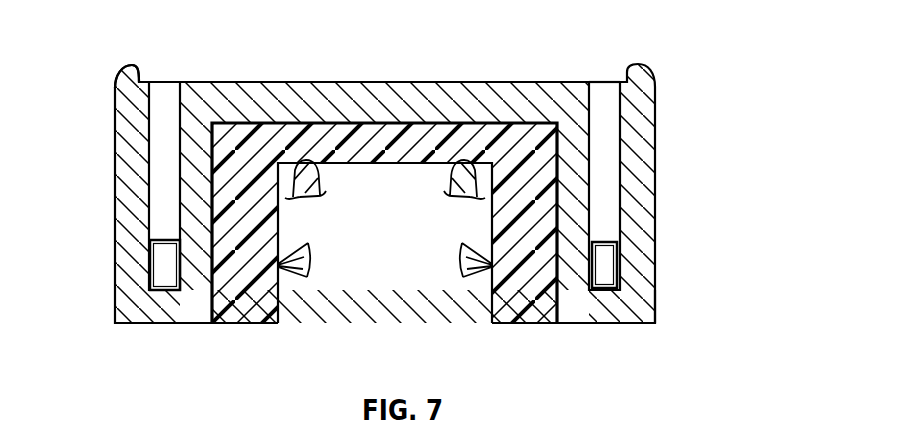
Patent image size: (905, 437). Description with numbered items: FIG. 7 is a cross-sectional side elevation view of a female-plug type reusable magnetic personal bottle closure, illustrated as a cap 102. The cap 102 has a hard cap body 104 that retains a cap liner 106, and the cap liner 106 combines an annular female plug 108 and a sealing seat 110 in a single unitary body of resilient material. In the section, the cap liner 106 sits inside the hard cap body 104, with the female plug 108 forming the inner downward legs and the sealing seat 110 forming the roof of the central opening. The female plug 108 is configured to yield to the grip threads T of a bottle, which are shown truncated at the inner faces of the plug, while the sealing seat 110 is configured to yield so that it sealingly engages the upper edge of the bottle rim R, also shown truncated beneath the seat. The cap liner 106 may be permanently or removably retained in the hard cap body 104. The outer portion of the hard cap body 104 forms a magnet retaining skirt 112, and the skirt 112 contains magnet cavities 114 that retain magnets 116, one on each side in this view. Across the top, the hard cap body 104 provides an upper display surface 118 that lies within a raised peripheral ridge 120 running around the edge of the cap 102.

The cap 102 is at (699, 123).
The hard cap body 104 is at (654, 170).
The cap liner 106 is at (528, 322).
The annular female plug 108 is at (278, 311).
The sealing seat 110 is at (368, 163).
The magnet retaining skirt 112 is at (632, 322).
The magnet cavities 114 is at (610, 81).
The magnets 116 is at (603, 243).
The upper display surface 118 is at (227, 82).
The raised peripheral ridge 120 is at (120, 72).
The bottle rim R is at (428, 210).
The grip threads T is at (440, 300).